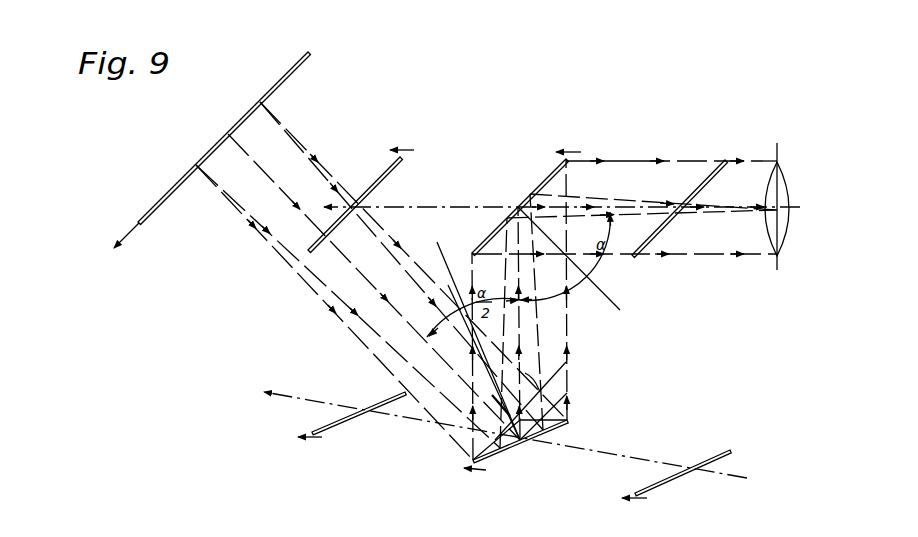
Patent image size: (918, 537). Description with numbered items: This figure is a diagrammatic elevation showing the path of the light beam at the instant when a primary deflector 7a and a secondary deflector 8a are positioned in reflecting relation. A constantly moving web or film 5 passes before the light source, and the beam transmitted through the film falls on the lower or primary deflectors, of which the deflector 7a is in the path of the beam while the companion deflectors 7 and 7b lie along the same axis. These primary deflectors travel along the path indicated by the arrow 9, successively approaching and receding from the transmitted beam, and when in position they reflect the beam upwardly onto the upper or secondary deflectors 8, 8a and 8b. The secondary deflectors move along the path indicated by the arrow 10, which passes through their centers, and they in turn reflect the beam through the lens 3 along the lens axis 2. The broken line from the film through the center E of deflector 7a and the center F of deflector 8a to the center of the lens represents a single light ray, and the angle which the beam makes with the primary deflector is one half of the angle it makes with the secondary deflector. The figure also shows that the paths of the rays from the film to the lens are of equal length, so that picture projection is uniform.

The moving web or film 5 is at (301, 54).
The secondary deflector 8b is at (376, 180).
The secondary deflector 8a is at (546, 176).
The secondary deflector 8 is at (702, 184).
The lens 3 is at (780, 163).
The path or axis of the secondary deflectors 10 is at (438, 206).
The lens axis 2 is at (428, 214).
The primary deflector 7a is at (565, 425).
The primary deflector 7b is at (332, 430).
The primary deflector 7 is at (677, 478).
The path or axis of the primary deflectors 9 is at (297, 399).